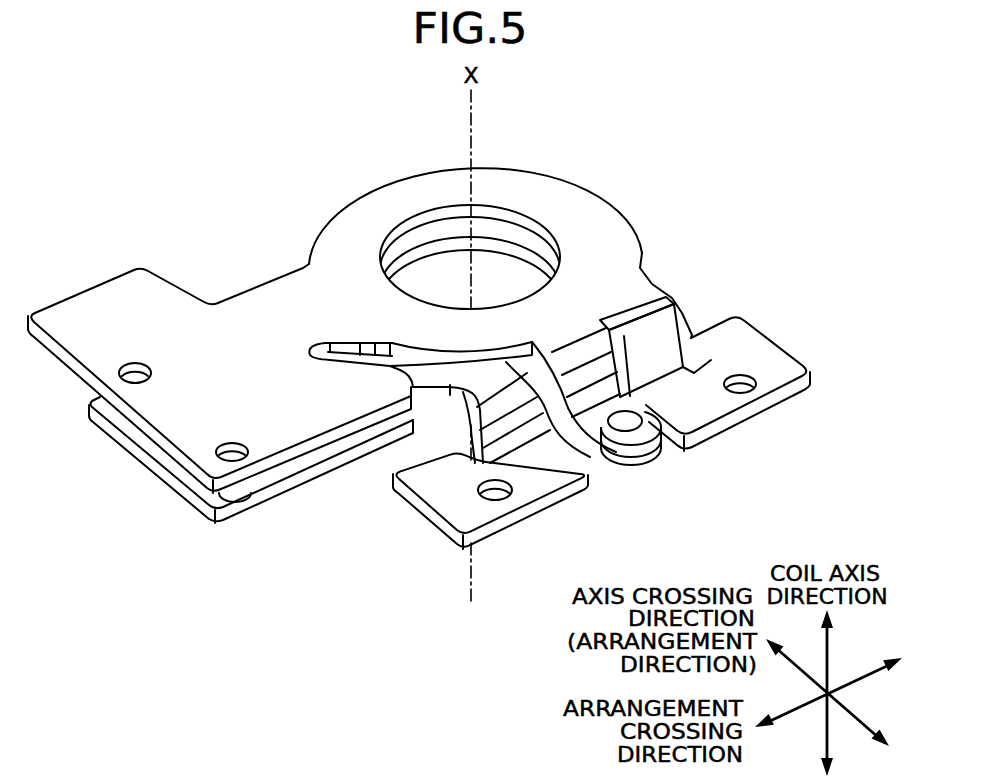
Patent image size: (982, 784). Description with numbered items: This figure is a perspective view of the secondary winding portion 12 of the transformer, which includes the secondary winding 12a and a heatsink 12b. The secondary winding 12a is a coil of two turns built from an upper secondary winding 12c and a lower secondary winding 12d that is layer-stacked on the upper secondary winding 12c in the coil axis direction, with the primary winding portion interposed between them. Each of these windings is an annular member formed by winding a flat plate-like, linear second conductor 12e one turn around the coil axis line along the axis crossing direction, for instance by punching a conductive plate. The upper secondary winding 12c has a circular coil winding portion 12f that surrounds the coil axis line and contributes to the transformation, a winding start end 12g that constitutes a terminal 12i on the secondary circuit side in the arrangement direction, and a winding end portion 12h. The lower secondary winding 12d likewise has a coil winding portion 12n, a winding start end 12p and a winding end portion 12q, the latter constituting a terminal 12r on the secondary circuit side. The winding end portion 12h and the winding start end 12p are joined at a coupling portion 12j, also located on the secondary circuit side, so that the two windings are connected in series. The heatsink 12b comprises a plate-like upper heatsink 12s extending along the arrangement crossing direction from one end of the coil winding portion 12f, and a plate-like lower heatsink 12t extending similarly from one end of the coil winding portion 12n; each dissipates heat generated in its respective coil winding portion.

The secondary winding portion 12 is at (692, 114).
The secondary winding 12a is at (500, 233).
The second conductor 12e is at (553, 159).
The heatsink 12b is at (220, 364).
The upper heatsink 12s is at (147, 290).
The lower heatsink 12t is at (160, 455).
The upper secondary winding 12c is at (570, 308).
The coil winding portion 12f is at (590, 217).
The lower secondary winding 12d is at (467, 225).
The coil winding portion 12n is at (428, 232).
The winding start end 12g is at (748, 361).
The terminal 12i is at (768, 362).
The winding end portion 12h is at (610, 403).
The coupling portion 12j is at (649, 375).
The winding start end 12p is at (644, 461).
The winding end portion 12q is at (530, 481).
The terminal 12r is at (523, 490).